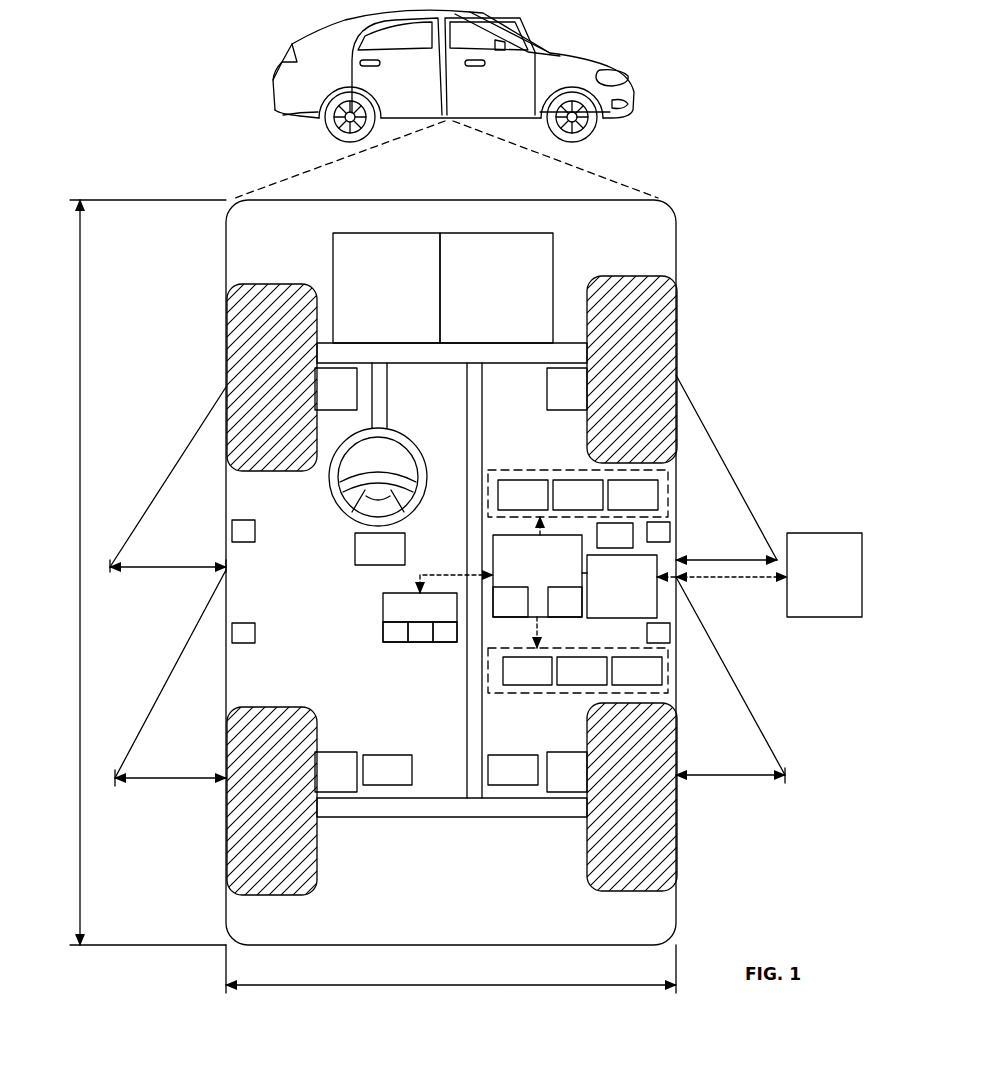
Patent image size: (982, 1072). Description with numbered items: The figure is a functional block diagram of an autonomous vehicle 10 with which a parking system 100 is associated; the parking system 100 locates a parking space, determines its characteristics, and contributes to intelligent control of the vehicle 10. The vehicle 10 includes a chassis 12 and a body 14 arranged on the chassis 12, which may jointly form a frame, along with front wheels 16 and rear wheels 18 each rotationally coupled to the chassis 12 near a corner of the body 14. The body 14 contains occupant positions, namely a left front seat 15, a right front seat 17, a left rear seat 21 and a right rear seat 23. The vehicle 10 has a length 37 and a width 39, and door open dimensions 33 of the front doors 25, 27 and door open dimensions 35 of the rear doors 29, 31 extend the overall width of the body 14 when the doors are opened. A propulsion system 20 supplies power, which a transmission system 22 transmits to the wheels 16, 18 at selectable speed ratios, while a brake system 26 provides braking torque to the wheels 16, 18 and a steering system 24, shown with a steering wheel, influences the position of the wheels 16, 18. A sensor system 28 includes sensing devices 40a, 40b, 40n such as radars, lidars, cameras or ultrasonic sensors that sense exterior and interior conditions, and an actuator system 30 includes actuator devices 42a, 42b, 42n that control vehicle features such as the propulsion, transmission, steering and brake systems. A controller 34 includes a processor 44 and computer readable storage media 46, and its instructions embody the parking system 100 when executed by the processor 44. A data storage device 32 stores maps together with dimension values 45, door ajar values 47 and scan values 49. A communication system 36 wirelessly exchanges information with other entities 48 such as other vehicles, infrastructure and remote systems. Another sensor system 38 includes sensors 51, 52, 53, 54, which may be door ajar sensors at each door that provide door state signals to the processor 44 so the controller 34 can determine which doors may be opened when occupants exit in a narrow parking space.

The vehicle 10 is at (275, 68).
The parking system 100 is at (700, 136).
The chassis 12 is at (463, 738).
The body 14 is at (676, 898).
The left front seat 15 is at (380, 549).
The front wheels 16 is at (270, 284).
The right front seat 17 is at (615, 535).
The rear wheels 18 is at (290, 895).
The propulsion system 20 is at (386, 288).
The left rear seat 21 is at (387, 770).
The transmission system 22 is at (496, 288).
The right rear seat 23 is at (513, 770).
The steering system 24 is at (412, 386).
The front door 25 is at (175, 460).
The brake system 26 is at (451, 580).
The front door 27 is at (700, 430).
The sensor system 28 is at (513, 468).
The rear door 29 is at (150, 713).
The actuator system 30 is at (557, 693).
The rear door 31 is at (790, 710).
The data storage device 32 is at (378, 612).
The door open dimensions 33 is at (155, 570).
The controller 34 is at (540, 582).
The door open dimensions 35 is at (140, 780).
The communication system 36 is at (687, 586).
The length 37 is at (80, 478).
The sensor system 38 is at (222, 652).
The width 39 is at (440, 985).
The sensing device 40a is at (523, 495).
The sensing device 40b is at (578, 495).
The sensing device 40n is at (633, 495).
The actuator device 42a is at (527, 671).
The actuator device 42b is at (582, 671).
The actuator device 42n is at (637, 671).
The processor 44 is at (510, 602).
The dimension values 45 is at (395, 642).
The computer readable storage device or media 46 is at (565, 602).
The door ajar values 47 is at (415, 642).
The other entities 48 is at (824, 575).
The scan values 49 is at (442, 642).
The sensor 51 is at (255, 530).
The sensor 52 is at (672, 532).
The sensor 53 is at (255, 632).
The sensor 54 is at (670, 634).